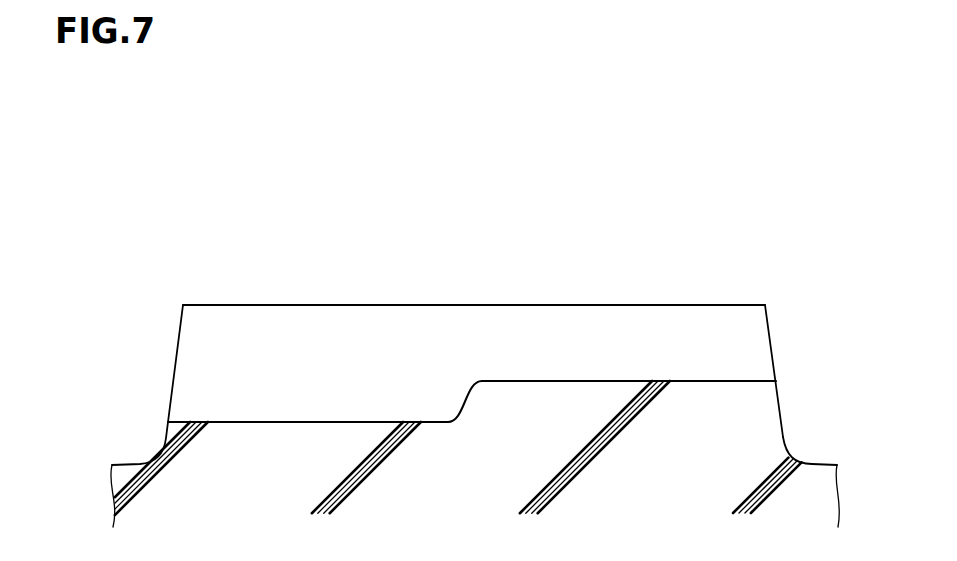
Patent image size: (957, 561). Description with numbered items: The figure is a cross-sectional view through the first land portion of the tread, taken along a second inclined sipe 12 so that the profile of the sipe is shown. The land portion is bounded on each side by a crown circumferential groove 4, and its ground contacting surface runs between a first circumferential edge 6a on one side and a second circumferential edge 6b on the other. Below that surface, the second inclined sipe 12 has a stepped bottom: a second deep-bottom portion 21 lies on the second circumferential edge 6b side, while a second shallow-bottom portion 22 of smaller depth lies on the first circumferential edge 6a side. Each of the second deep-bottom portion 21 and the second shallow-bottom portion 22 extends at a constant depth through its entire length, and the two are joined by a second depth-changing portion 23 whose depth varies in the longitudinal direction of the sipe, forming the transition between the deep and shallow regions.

The crown circumferential groove 4 is at (138, 450).
The first circumferential edge 6a is at (765, 305).
The second circumferential edge 6b is at (183, 305).
The second inclined sipe 12 is at (278, 305).
The second deep-bottom portion 21 is at (353, 417).
The second shallow-bottom portion 22 is at (590, 379).
The second depth-changing portion 23 is at (466, 383).